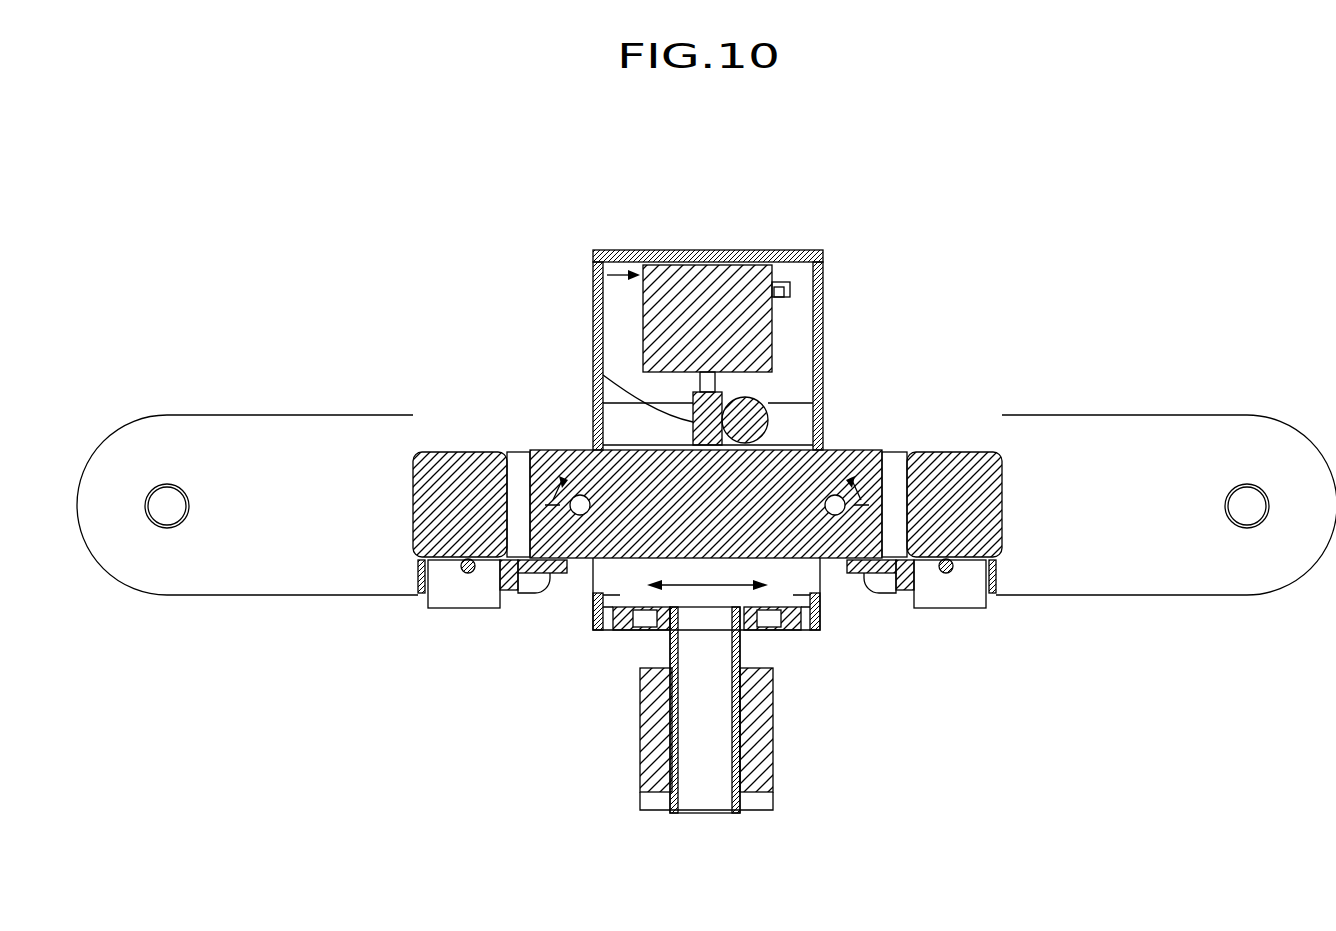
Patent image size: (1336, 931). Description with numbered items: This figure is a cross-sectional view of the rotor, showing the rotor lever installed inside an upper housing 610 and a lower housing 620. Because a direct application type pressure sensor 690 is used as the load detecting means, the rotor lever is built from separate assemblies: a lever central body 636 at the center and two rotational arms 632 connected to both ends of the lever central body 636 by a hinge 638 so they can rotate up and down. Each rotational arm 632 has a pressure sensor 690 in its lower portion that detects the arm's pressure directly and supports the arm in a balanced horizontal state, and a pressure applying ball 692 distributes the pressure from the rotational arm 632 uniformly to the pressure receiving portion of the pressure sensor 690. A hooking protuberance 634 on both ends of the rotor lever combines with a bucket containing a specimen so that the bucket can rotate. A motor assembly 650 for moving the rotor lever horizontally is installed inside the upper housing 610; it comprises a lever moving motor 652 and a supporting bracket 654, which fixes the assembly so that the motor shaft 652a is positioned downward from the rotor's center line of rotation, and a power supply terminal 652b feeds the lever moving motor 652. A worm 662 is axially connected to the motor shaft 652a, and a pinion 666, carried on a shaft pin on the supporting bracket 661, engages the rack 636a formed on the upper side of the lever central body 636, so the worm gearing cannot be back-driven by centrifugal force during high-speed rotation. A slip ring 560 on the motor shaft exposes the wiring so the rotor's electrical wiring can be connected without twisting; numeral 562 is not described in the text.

The slip ring 560 is at (628, 785).
The threaded portion 562 is at (637, 697).
The upper housing 610 is at (772, 250).
The lower housing 620 is at (593, 630).
The rotational arm 632 is at (187, 585).
The hooking protuberance 634 is at (168, 507).
The lever central body 636 is at (530, 452).
The rack 636a is at (590, 447).
The hinge 638 is at (832, 508).
The motor assembly 650 is at (592, 263).
The lever moving motor 652 is at (712, 265).
The motor shaft 652a is at (720, 380).
The power supply terminal 652b is at (790, 290).
The supporting bracket 654 is at (760, 372).
The supporting bracket 661 is at (617, 413).
The worm 662 is at (590, 287).
The pinion 666 is at (865, 450).
The pressure sensor 690 is at (462, 612).
The pressure applying ball 692 is at (467, 565).